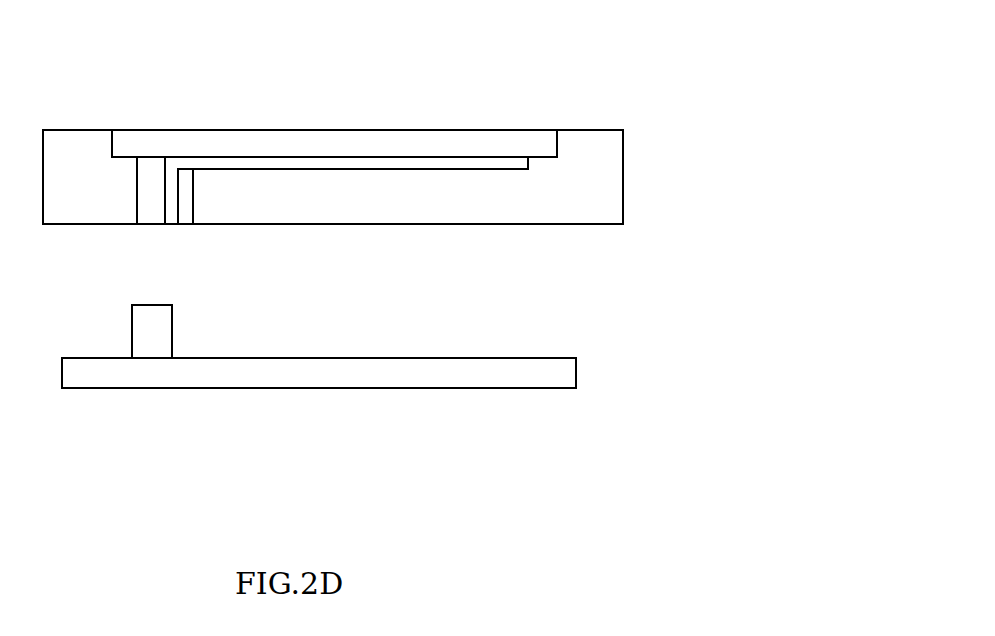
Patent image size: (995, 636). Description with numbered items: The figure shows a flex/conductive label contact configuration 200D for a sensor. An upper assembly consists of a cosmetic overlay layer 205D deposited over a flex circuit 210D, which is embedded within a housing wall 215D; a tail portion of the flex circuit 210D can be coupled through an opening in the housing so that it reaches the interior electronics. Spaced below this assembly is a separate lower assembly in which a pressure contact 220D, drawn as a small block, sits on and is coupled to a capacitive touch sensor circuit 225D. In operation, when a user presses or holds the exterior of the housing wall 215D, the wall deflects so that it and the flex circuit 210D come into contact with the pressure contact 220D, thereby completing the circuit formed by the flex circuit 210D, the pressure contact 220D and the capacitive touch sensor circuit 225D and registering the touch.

The flex/conductive label contact configuration 200D is at (360, 73).
The cosmetic overlay layer 205D is at (492, 138).
The flex circuit 210D is at (520, 166).
The housing wall 215D is at (597, 211).
The pressure contact 220D is at (132, 333).
The capacitive touch sensor circuit 225D is at (558, 376).